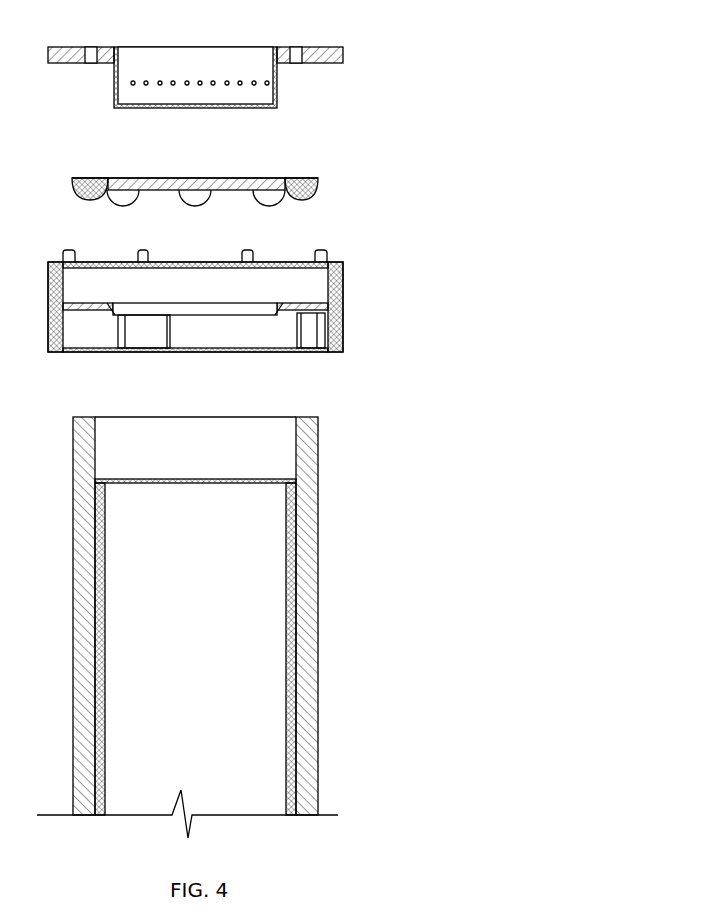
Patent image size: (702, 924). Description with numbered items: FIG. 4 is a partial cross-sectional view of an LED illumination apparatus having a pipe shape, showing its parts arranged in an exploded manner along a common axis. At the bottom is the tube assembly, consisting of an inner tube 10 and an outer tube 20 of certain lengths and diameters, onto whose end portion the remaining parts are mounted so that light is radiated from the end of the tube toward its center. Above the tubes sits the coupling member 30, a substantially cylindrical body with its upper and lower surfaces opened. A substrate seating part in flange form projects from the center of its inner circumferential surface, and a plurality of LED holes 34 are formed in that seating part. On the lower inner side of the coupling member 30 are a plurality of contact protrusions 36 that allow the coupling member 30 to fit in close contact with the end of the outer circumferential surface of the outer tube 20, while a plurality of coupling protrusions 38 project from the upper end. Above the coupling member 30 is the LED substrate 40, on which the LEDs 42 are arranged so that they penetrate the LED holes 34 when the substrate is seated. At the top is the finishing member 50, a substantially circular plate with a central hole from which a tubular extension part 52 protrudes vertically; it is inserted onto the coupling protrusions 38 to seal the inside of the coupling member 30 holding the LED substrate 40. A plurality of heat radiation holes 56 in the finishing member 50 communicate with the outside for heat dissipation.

The inner tube 10 is at (277, 480).
The outer tube 20 is at (238, 616).
The coupling member 30 is at (209, 304).
The LED holes 34 is at (88, 303).
The contact protrusions 36 is at (320, 333).
The coupling protrusions 38 is at (140, 250).
The LED substrate 40 is at (226, 185).
The LEDs 42 is at (273, 205).
The finishing member 50 is at (215, 72).
The extension part 52 is at (167, 77).
The heat radiation holes 56 is at (93, 48).